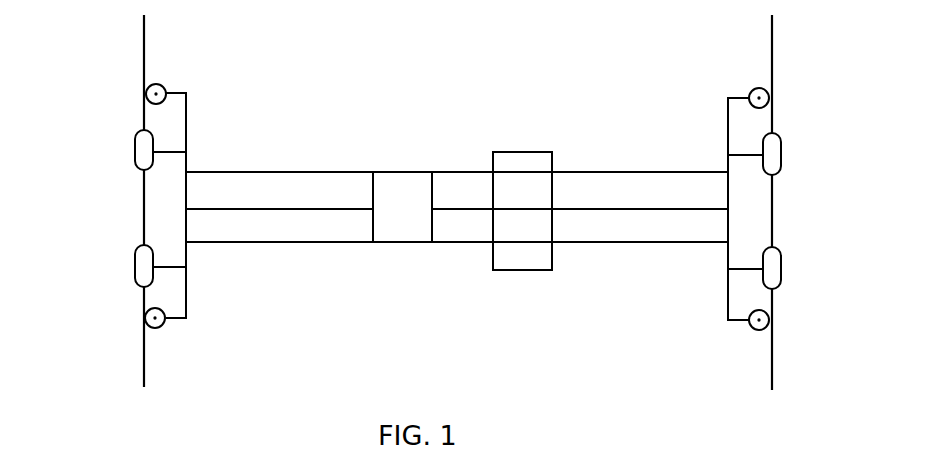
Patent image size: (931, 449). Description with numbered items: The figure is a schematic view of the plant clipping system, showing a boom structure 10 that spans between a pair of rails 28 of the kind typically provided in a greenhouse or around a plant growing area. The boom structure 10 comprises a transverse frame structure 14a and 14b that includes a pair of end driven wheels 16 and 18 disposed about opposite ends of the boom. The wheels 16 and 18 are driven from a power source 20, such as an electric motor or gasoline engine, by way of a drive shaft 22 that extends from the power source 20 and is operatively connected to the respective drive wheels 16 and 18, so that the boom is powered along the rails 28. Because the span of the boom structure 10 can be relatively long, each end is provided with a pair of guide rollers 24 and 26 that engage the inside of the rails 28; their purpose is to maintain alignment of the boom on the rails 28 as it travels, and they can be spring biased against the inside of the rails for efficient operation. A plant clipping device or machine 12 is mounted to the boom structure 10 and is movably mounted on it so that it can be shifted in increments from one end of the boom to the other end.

The boom structure 10 is at (421, 138).
The plant clipping device 12 is at (520, 280).
The transverse frame structure 14a is at (308, 170).
The transverse frame structure 14b is at (213, 243).
The driven wheel 16 is at (135, 145).
The driven wheel 18 is at (135, 262).
The power source 20 is at (417, 238).
The drive shaft 22 is at (263, 210).
The guide roller 24 is at (160, 84).
The guide roller 26 is at (162, 325).
The rails 28 is at (144, 57).